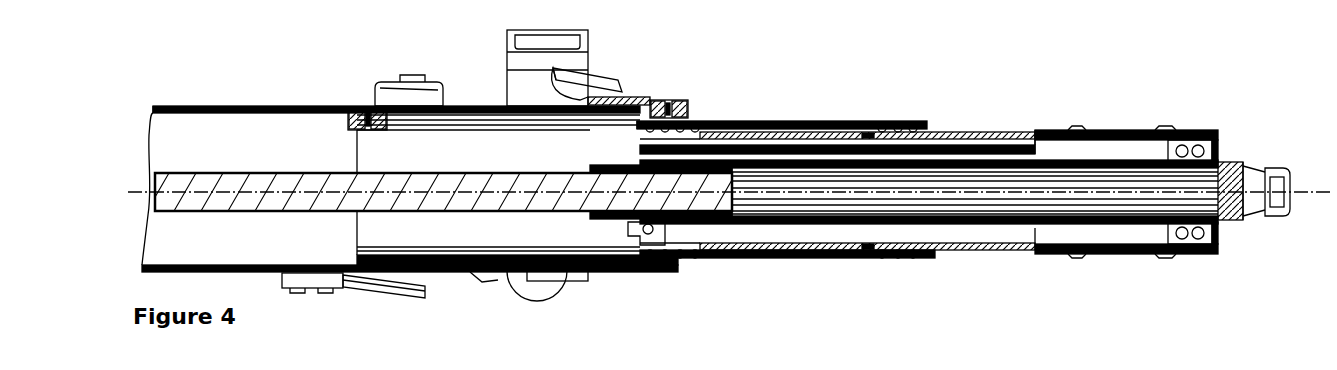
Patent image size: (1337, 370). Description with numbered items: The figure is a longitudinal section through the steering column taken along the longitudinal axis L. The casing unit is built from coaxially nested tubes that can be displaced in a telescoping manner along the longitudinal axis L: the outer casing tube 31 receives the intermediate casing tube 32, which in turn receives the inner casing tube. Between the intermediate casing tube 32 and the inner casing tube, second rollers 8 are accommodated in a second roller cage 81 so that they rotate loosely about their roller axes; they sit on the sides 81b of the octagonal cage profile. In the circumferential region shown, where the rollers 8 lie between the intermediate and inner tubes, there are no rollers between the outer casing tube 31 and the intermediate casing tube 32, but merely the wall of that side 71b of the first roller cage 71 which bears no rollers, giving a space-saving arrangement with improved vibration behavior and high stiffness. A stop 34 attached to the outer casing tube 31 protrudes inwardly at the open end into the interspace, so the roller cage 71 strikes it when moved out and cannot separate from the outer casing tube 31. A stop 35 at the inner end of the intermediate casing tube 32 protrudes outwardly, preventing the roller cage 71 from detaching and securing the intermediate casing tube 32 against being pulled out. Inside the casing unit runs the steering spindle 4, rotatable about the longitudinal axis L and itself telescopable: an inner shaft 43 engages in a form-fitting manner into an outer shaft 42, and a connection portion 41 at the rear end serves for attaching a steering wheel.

The inner shaft 43 is at (214, 178).
The outer casing tube 31 is at (236, 105).
The stop 35 is at (357, 109).
The first roller cage 71 is at (477, 112).
The sides of the first roller cage without rollers 71b is at (488, 110).
The second rollers 8 is at (660, 101).
The stop 34 is at (681, 100).
The second roller cage 81 is at (702, 128).
The intermediate casing tube 32 is at (765, 120).
The sides of the second roller cage with rollers 81b is at (870, 128).
The outer shaft 42 is at (1112, 160).
The steering spindle 4 is at (1242, 163).
The connection portion 41 is at (1285, 168).
The longitudinal axis L is at (1318, 193).